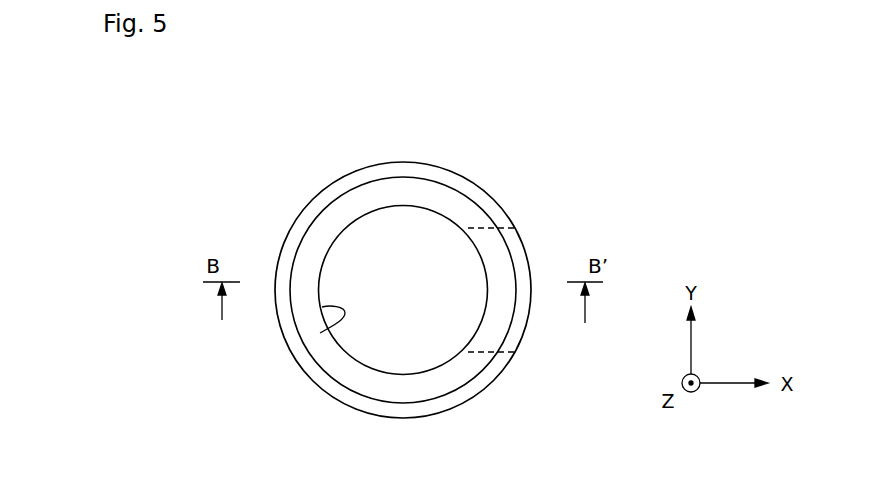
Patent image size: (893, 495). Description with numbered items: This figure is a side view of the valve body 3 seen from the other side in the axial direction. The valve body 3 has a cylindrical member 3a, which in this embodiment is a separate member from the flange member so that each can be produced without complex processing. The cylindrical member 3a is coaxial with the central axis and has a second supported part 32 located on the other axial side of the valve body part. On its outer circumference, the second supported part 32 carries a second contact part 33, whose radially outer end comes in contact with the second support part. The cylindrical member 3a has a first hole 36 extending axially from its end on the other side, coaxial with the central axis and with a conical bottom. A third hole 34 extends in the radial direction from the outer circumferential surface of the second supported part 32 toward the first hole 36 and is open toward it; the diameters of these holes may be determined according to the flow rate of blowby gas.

The valve body 3 is at (428, 197).
The cylindrical member 3a is at (363, 198).
The second supported part 32 is at (493, 385).
The second contact part 33 is at (363, 402).
The third hole 34 is at (488, 229).
The first hole 36 is at (320, 333).